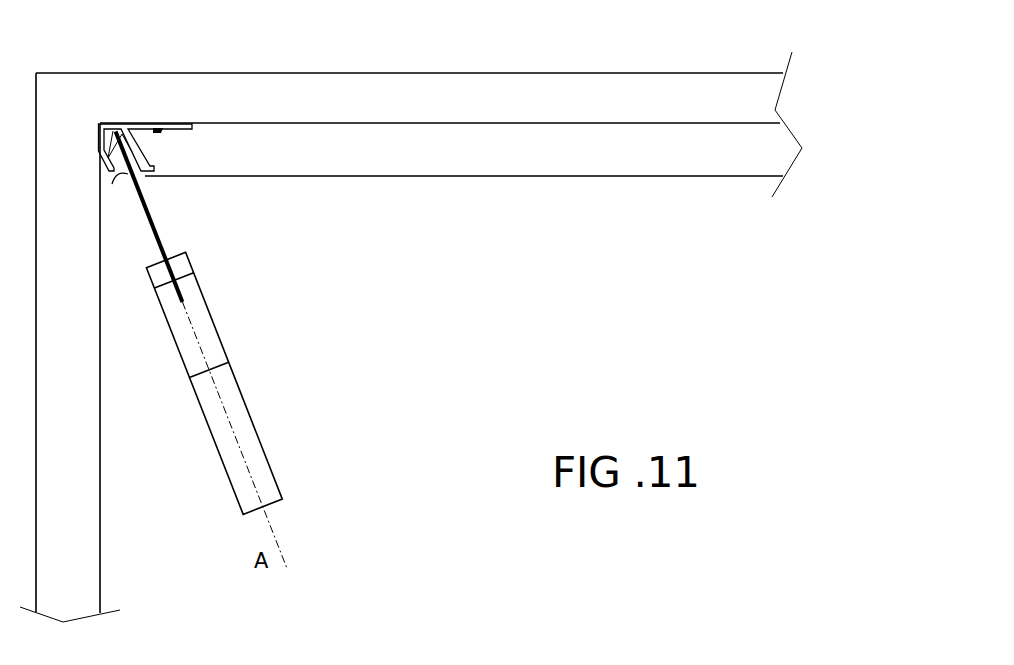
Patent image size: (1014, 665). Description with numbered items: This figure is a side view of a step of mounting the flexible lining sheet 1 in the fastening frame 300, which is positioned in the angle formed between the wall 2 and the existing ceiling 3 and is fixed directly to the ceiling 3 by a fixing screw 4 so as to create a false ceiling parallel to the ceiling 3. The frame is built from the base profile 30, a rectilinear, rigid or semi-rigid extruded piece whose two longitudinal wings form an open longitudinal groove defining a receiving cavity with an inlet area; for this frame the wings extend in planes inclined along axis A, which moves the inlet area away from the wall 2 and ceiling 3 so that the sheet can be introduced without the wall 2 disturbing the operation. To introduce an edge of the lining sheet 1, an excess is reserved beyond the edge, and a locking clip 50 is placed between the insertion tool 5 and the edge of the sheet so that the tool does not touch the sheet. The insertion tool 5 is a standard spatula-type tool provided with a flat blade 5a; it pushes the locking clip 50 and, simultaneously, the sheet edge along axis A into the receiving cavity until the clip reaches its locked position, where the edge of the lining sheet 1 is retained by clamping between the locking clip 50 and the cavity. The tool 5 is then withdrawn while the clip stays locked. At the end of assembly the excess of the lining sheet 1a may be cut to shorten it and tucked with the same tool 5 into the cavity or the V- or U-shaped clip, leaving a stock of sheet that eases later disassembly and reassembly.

The lining sheet 1 is at (535, 176).
The excess of the lining sheet 1a is at (126, 176).
The wall 2 is at (80, 307).
The ceiling 3 is at (618, 110).
The fixing screw 4 is at (158, 132).
The insertion tool 5 is at (229, 378).
The flat blade 5a is at (151, 220).
The base profile 30 is at (143, 123).
The locking clip 50 is at (128, 153).
The fastening frame 300 is at (110, 96).